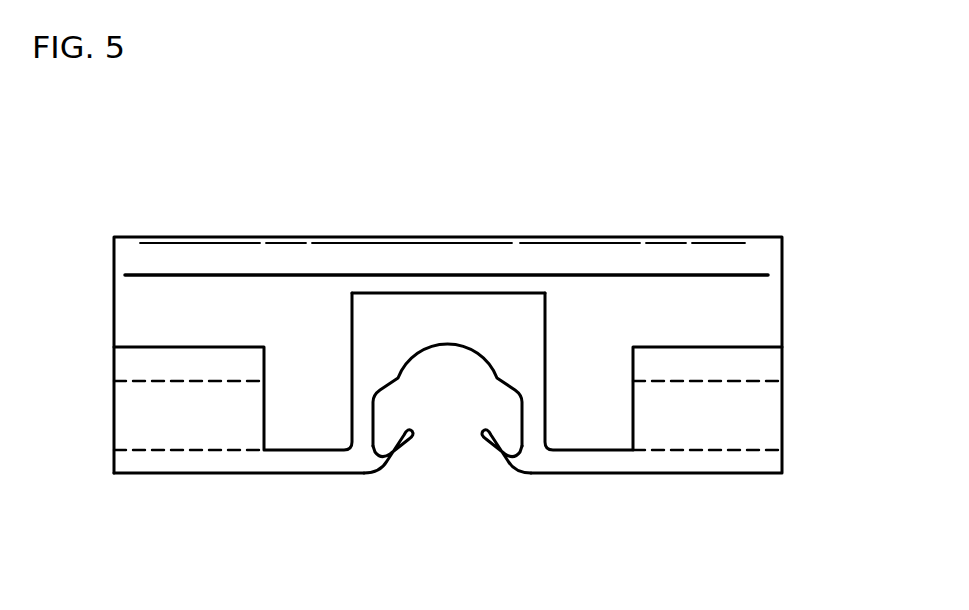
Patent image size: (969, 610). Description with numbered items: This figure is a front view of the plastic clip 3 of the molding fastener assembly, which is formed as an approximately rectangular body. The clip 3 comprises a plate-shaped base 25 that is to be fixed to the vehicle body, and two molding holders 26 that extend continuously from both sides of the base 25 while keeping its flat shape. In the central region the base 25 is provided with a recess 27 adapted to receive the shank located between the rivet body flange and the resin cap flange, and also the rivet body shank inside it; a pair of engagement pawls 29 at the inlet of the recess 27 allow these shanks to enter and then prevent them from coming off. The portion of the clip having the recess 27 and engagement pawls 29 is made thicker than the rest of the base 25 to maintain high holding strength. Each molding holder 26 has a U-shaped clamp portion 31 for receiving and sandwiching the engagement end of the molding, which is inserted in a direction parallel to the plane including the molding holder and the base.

The clip 3 is at (802, 231).
The base 25 is at (263, 225).
The molding holders 26 is at (114, 225).
The recess 27 is at (428, 390).
The engagement pawls 29 is at (403, 448).
The U-shaped clamp portion 31 is at (135, 363).